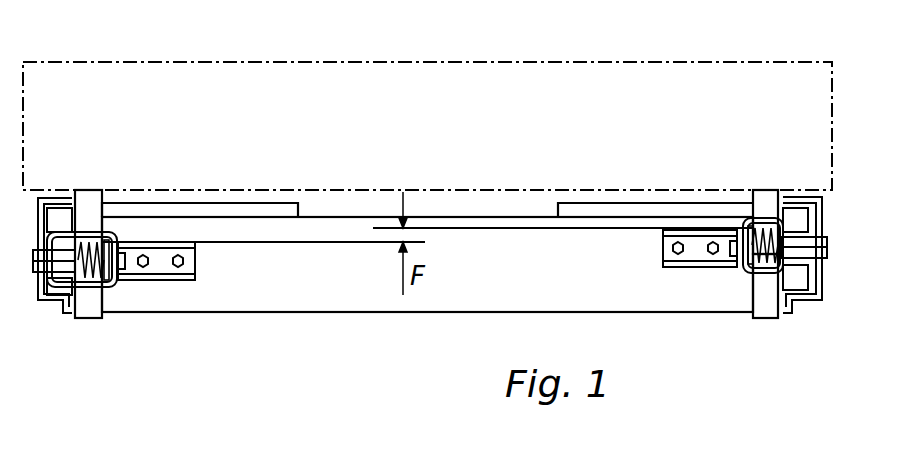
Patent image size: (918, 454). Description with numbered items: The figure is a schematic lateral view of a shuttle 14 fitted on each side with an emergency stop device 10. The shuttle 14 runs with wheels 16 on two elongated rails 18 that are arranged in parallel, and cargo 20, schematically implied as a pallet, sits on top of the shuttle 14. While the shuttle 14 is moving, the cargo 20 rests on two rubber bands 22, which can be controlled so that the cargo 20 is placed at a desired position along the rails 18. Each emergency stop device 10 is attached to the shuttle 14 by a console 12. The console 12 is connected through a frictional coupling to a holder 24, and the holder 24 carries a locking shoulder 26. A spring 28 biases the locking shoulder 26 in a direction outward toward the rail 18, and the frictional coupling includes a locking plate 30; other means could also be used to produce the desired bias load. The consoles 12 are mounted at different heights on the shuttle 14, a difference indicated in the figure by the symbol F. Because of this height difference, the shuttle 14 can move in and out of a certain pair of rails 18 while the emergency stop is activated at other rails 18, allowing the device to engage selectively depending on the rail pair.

The emergency stop device 10 is at (727, 192).
The console 12 is at (672, 258).
The shuttle 14 is at (313, 303).
The wheels 16 is at (800, 287).
The rails 18 is at (805, 200).
The cargo 20 is at (247, 75).
The rubber bands 22 is at (768, 200).
The holder 24 is at (768, 272).
The locking shoulder 26 is at (795, 247).
The spring 28 is at (92, 275).
The locking plate 30 is at (748, 268).